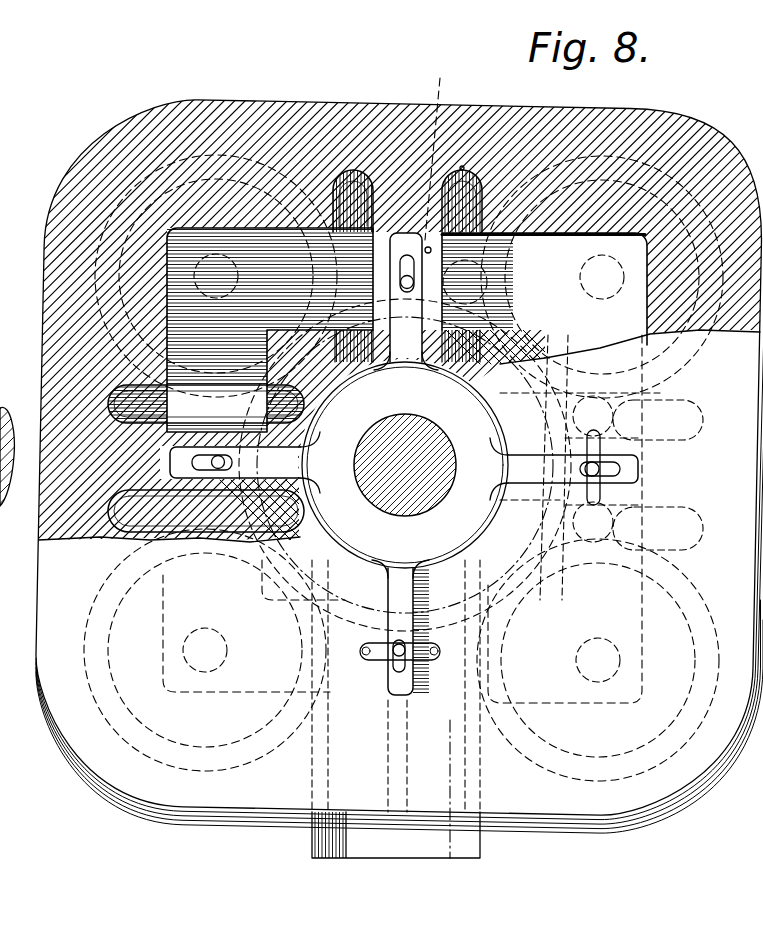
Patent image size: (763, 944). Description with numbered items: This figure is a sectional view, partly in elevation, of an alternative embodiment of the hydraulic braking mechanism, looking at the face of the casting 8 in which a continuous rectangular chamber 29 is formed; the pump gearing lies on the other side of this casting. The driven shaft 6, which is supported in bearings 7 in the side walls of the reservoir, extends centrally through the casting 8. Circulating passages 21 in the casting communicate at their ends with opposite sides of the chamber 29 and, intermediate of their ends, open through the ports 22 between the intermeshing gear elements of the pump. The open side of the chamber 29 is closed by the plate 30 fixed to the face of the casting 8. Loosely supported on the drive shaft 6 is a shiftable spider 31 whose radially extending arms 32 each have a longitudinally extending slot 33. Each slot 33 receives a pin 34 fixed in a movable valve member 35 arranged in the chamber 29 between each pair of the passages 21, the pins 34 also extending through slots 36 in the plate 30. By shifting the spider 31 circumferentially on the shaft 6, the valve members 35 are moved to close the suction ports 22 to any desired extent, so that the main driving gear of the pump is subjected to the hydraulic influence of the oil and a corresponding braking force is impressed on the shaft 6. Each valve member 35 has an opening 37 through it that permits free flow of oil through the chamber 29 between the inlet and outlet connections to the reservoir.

The casting 8 is at (290, 122).
The circulating passages 21 is at (366, 178).
The movable valve member 35 is at (391, 233).
The opening 37 is at (462, 166).
The bearings 7 is at (455, 94).
The chamber 29 is at (403, 468).
The ports 22 is at (486, 297).
The slots 36 is at (598, 450).
The radially extending arms 32 is at (413, 335).
The driven shaft 6 is at (438, 457).
The shiftable spider 31 is at (405, 465).
The pin 34 is at (296, 478).
The longitudinally extending slot 33 is at (216, 465).
The plate 30 is at (50, 608).